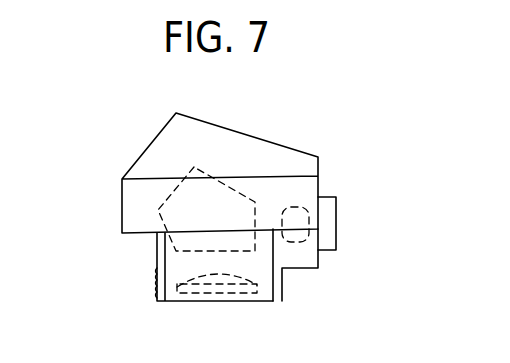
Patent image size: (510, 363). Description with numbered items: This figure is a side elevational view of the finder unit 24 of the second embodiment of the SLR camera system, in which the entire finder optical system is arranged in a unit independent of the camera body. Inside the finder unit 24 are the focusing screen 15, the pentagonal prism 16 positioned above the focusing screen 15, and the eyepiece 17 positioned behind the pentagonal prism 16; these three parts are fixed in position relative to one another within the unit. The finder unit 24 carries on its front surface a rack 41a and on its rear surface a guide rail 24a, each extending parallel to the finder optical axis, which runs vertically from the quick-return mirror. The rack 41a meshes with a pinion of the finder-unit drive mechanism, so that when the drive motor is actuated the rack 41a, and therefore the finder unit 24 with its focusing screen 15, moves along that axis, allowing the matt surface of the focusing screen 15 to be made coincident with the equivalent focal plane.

The finder unit 24 is at (163, 142).
The guide rail 24a is at (283, 287).
The pentagonal prism 16 is at (225, 195).
The eyepiece 17 is at (302, 206).
The rack 41a is at (155, 285).
The focusing screen 15 is at (235, 288).